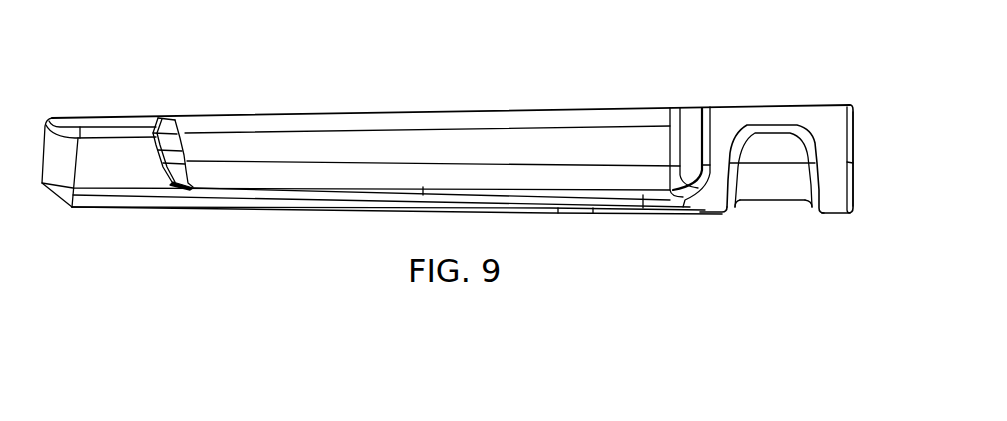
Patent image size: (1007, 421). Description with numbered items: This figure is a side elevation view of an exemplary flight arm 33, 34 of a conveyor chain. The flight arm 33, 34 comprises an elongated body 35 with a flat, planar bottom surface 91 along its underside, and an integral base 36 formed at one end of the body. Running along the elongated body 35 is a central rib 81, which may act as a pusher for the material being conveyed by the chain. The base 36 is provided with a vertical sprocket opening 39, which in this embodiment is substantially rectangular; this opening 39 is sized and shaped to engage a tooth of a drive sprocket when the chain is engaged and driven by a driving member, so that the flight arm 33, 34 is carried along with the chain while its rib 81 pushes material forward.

The flight arm 33 is at (822, 85).
The flight arm 34 is at (822, 85).
The elongated body 35 is at (192, 86).
The integral base 36 is at (890, 150).
The sprocket opening 39 is at (770, 226).
The central rib 81 is at (433, 110).
The flat, planar bottom surface 91 is at (593, 213).